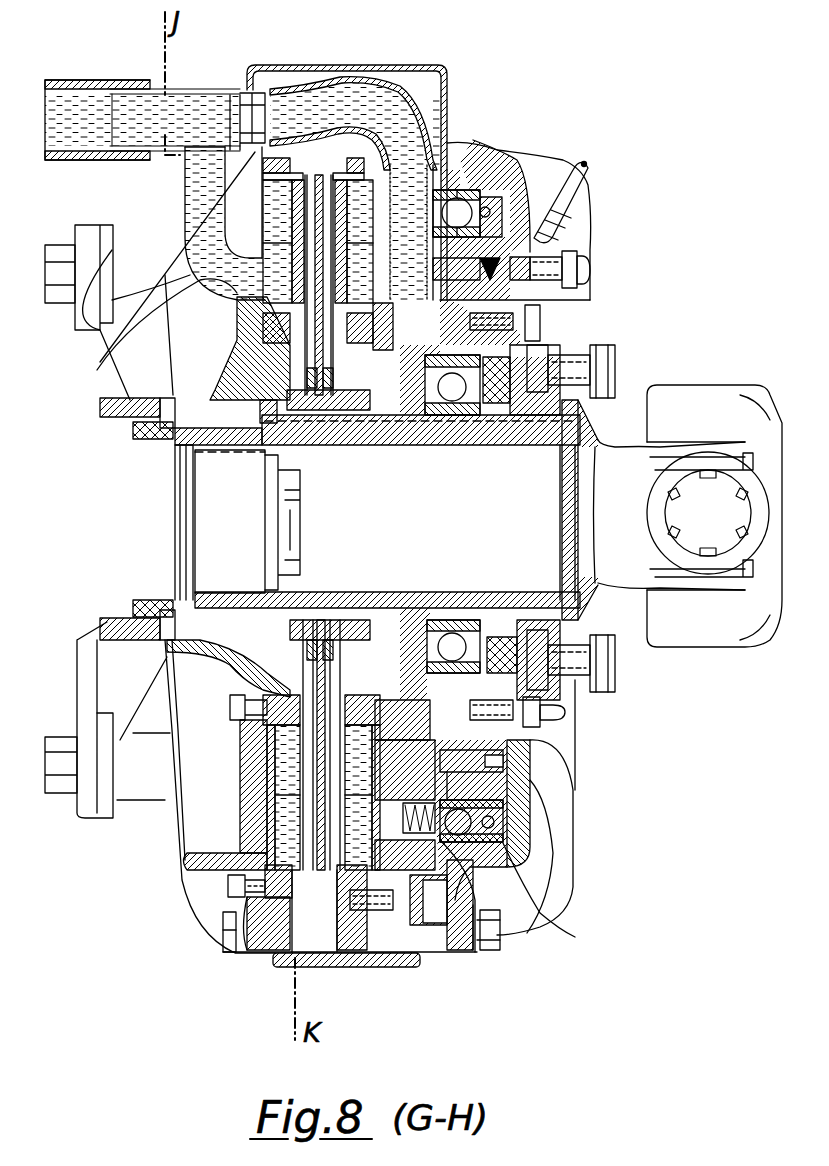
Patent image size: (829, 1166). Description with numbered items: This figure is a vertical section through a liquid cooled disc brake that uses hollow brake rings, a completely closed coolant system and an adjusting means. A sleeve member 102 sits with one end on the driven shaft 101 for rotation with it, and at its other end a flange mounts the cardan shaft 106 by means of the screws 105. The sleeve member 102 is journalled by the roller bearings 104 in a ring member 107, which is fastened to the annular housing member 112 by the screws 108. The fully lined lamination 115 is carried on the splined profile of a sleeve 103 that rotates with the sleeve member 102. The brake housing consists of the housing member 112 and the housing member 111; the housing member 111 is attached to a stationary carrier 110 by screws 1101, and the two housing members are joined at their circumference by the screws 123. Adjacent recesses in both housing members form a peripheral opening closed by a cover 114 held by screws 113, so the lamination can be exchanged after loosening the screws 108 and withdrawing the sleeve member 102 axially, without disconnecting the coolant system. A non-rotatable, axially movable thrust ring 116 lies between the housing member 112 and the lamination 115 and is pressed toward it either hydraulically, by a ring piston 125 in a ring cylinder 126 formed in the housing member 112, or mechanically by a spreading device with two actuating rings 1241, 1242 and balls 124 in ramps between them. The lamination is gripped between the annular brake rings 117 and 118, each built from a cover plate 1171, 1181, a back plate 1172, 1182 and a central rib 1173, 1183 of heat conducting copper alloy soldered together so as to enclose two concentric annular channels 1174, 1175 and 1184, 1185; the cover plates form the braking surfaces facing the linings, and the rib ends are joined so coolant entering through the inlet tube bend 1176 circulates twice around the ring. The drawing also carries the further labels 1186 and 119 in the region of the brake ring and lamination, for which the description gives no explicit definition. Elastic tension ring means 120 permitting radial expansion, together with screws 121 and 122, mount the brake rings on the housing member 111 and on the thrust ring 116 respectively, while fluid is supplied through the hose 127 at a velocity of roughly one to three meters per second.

The driven shaft 101 is at (235, 520).
The sleeve member 102 is at (470, 425).
The sleeve 103 is at (345, 640).
The roller bearings 104 is at (460, 630).
The screws 105 is at (555, 370).
The cardan shaft 106 is at (710, 640).
The ring member 107 is at (505, 400).
The screws 108 is at (535, 325).
The stationary carrier 110 is at (88, 235).
The screws 1101 is at (56, 760).
The housing member 111 is at (230, 888).
The annular housing member 112 is at (520, 853).
The screws 113 is at (255, 925).
The cover 114 is at (300, 965).
The lamination 115 is at (322, 175).
The thrust ring 116 is at (425, 925).
The brake ring 117 is at (262, 780).
The cover plate 1171 is at (230, 365).
The back plate 1172 is at (238, 240).
The central rib 1173 is at (230, 250).
The inner channel 1174 is at (280, 760).
The outer channel 1175 is at (285, 830).
The inlet tube bend 1176 is at (250, 300).
The brake ring 118 is at (430, 150).
The cover plate 1181 is at (440, 200).
The back plate 1182 is at (540, 160).
The central rib 1183 is at (560, 255).
The inner channel 1184 is at (545, 732).
The outer channel 1185 is at (340, 940).
The bearing retainer 1186 is at (485, 215).
The valve disc 119 is at (280, 160).
The elastic tension ring means 120 is at (300, 420).
The screws 121 is at (292, 700).
The screws 122 is at (420, 680).
The screws 123 is at (450, 895).
The balls 124 is at (455, 905).
The actuating ring 1241 is at (490, 867).
The actuating ring 1242 is at (470, 830).
The ring piston 125 is at (505, 810).
The ring cylinder 126 is at (505, 760).
The hose 127 is at (375, 120).